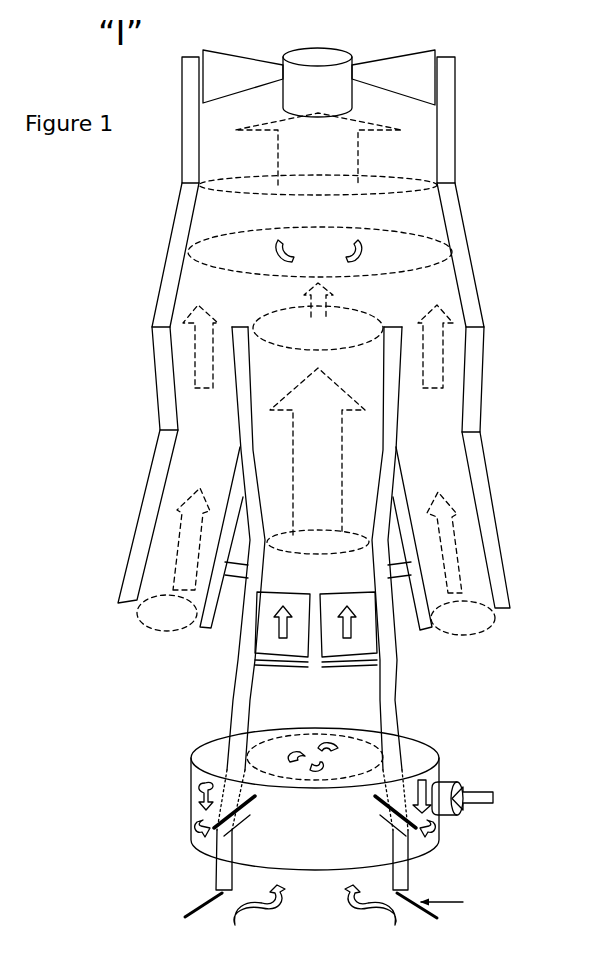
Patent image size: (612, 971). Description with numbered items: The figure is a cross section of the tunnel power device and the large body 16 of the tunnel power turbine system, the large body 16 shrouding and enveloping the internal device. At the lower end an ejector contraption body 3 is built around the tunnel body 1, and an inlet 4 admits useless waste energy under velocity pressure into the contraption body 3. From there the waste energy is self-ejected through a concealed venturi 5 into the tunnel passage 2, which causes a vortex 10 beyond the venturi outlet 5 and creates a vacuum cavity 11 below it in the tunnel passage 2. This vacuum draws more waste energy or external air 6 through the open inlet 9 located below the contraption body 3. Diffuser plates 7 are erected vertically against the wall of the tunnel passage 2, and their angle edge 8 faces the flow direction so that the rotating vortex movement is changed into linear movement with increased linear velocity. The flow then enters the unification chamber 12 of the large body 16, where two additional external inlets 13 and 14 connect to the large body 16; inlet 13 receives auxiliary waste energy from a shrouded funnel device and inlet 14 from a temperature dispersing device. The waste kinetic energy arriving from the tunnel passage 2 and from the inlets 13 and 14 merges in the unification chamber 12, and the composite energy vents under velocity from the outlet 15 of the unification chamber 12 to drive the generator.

The tunnel body 1 is at (387, 462).
The tunnel passage 2 is at (315, 737).
The ejector contraption body 3 is at (187, 815).
The inlet 4 is at (470, 797).
The concealed venturi 5 is at (215, 843).
The waste energy/external air 6 is at (312, 898).
The diffuser plates 7 is at (267, 625).
The diffuser plates angle edge 8 is at (362, 666).
The open inlet 9 is at (408, 910).
The vortex 10 is at (323, 755).
The vacuum cavity 11 is at (380, 835).
The unification chamber 12 is at (320, 252).
The inlet 13 is at (470, 620).
The inlet 14 is at (158, 613).
The outlet 15 is at (319, 82).
The large body 16 is at (328, 332).